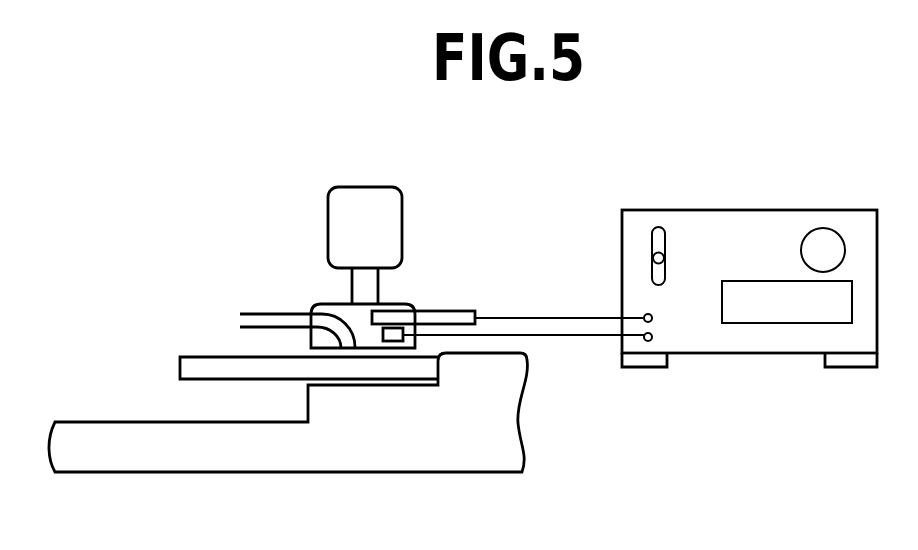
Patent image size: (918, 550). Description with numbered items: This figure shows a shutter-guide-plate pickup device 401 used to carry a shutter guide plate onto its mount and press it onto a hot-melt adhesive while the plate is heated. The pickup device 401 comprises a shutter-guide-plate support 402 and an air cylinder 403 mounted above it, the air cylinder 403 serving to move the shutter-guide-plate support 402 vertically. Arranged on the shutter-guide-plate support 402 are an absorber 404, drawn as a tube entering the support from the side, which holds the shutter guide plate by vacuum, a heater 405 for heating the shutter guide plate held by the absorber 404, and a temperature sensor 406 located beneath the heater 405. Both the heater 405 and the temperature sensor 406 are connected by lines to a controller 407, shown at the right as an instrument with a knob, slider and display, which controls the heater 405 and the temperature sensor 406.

The shutter-guide-plate pickup device 401 is at (541, 190).
The shutter-guide-plate support 402 is at (347, 304).
The air cylinder 403 is at (350, 196).
The absorber 404 is at (325, 304).
The heater 405 is at (404, 315).
The temperature sensor 406 is at (410, 329).
The controller 407 is at (732, 218).